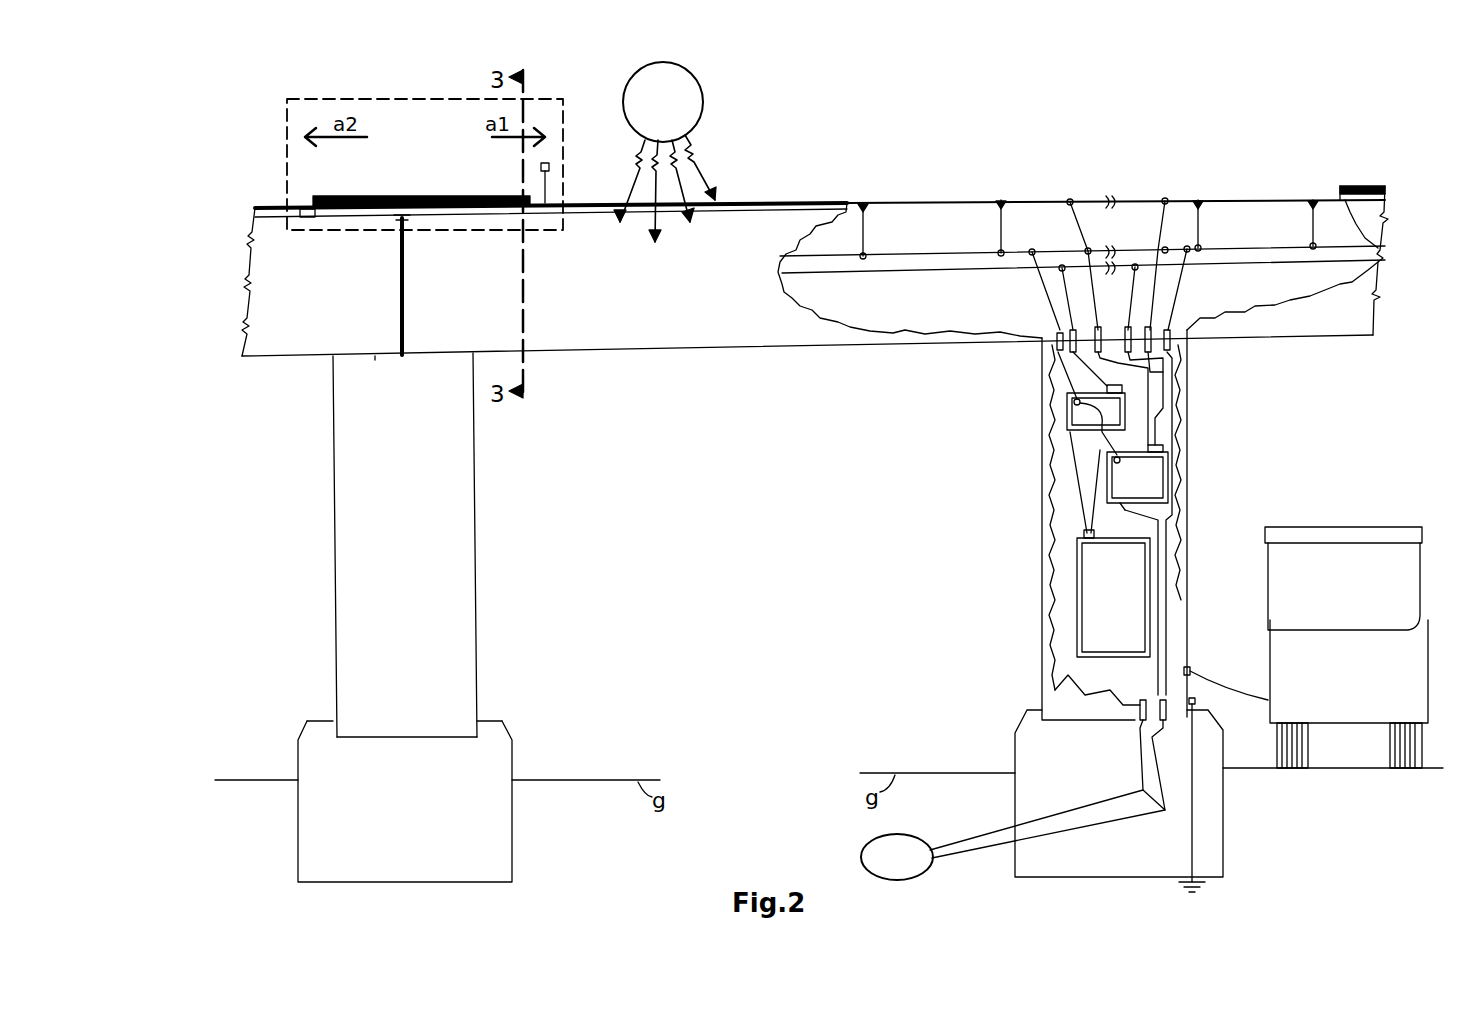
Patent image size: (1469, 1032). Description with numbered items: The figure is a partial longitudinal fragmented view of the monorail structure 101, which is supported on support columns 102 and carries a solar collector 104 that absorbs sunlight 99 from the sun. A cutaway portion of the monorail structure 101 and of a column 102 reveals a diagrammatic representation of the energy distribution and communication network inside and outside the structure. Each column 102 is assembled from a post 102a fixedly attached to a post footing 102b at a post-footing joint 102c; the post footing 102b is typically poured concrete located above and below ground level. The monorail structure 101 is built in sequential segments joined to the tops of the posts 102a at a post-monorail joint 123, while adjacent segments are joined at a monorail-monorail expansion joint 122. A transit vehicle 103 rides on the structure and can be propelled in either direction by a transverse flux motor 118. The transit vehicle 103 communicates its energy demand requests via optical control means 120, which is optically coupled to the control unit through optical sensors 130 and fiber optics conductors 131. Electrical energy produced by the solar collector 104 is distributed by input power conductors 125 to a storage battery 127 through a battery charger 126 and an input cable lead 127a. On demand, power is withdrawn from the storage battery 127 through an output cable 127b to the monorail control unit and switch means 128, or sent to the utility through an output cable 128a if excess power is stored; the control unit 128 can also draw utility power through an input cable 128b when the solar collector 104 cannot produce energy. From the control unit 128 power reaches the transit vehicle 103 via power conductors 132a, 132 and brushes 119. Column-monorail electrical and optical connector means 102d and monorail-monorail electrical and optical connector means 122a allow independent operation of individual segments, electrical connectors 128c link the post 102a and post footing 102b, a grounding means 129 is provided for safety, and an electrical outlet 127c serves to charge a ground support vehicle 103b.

The sunlight 99 is at (707, 167).
The monorail structure 101 is at (280, 365).
The support column 102 is at (282, 438).
The post 102a is at (350, 497).
The post footing 102b is at (328, 757).
The post-footing joint 102c is at (370, 735).
The column-monorail electrical and optical connector means 102d is at (1048, 345).
The transit vehicle 103 is at (330, 97).
The ground support vehicle 103b is at (1322, 527).
The solar collector 104 is at (730, 233).
The transverse flux motor 118 is at (330, 195).
The brushes 119 is at (310, 216).
The optical control means 120 is at (549, 167).
The monorail-monorail expansion joint 122 is at (412, 298).
The monorail-monorail electrical and optical connector means 122a is at (1115, 250).
The post-monorail joint 123 is at (375, 356).
The input power conductors 125 is at (918, 277).
The battery charger 126 is at (1080, 420).
The storage battery 127 is at (1097, 598).
The input cable lead 127a is at (1075, 480).
The output cable 127b is at (1085, 522).
The electrical outlet 127c is at (1190, 535).
The monorail control unit and switch means 128 is at (1160, 473).
The output cable 128a is at (1160, 665).
The input cable 128b is at (1167, 688).
The electrical connectors 128c is at (1135, 725).
The grounding means 129 is at (1193, 825).
The optical sensors 130 is at (863, 203).
The fiber optics conductors 131 is at (875, 256).
The power conductor 132 is at (965, 203).
The power conductor 132a is at (1108, 200).